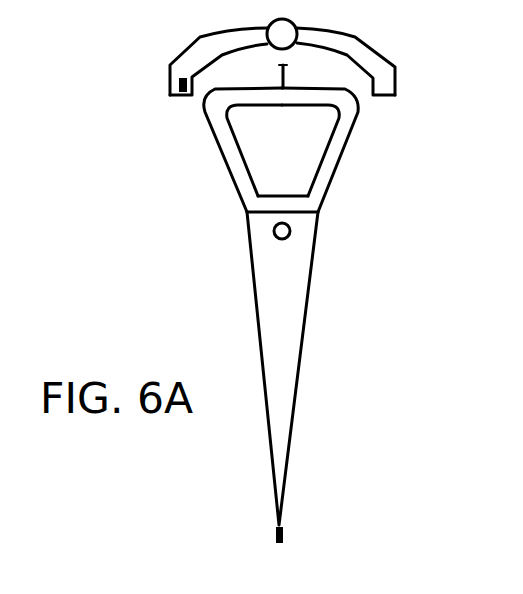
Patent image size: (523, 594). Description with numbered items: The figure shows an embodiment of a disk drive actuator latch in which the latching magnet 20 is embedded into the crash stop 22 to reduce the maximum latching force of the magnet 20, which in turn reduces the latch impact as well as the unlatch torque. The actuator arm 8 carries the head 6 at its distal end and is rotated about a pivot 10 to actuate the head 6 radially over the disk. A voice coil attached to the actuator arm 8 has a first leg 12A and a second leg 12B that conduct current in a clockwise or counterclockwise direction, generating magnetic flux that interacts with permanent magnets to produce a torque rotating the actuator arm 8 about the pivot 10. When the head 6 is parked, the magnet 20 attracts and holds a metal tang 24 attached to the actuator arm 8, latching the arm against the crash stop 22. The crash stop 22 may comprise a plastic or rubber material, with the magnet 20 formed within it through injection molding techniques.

The head 6 is at (274, 545).
The actuator arm 8 is at (249, 258).
The pivot 10 is at (282, 239).
The first leg 12A is at (216, 143).
The second leg 12B is at (348, 147).
The magnet 20 is at (170, 80).
The crash stop 22 is at (380, 57).
The metal tang 24 is at (285, 72).